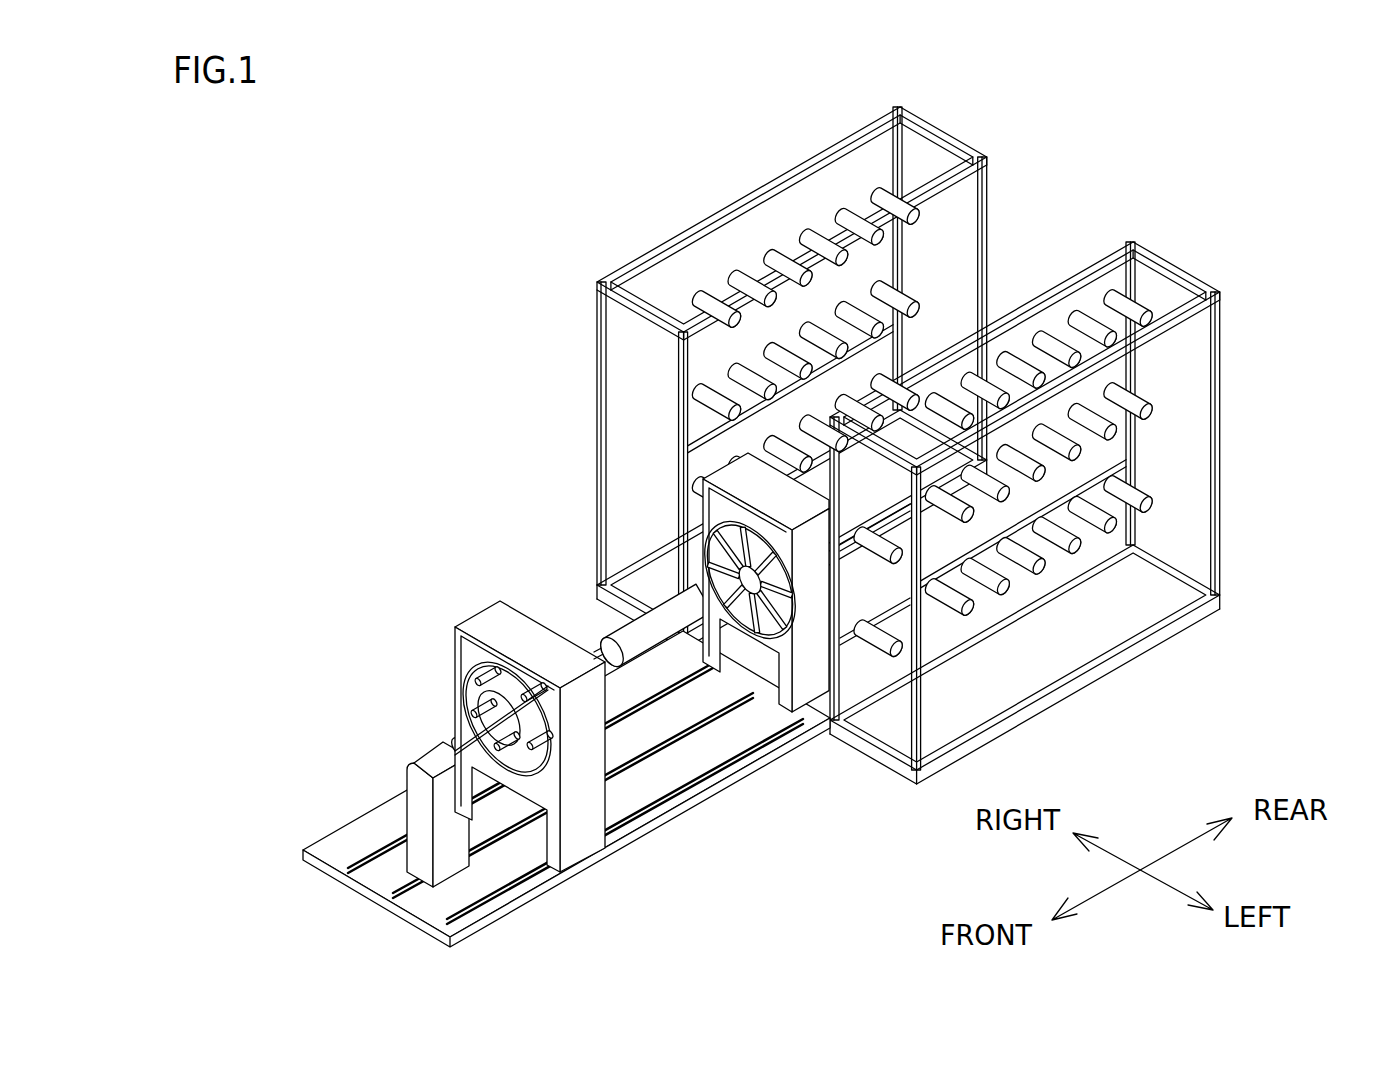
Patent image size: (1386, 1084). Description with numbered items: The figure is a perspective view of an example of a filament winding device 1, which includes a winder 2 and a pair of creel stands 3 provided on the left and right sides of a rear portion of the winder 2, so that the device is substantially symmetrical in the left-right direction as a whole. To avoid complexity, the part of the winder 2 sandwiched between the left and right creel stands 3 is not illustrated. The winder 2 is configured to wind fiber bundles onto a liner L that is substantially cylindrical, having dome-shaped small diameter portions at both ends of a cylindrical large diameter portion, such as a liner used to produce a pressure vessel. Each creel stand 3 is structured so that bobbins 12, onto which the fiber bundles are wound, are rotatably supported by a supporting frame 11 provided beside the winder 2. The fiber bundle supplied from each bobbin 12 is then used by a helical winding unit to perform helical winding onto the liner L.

The filament winding device 1 is at (294, 178).
The winder 2 is at (440, 555).
The creel stand 3 is at (968, 105).
The supporting frame 11 is at (810, 160).
The bobbin 12 is at (1040, 566).
The liner L is at (635, 632).